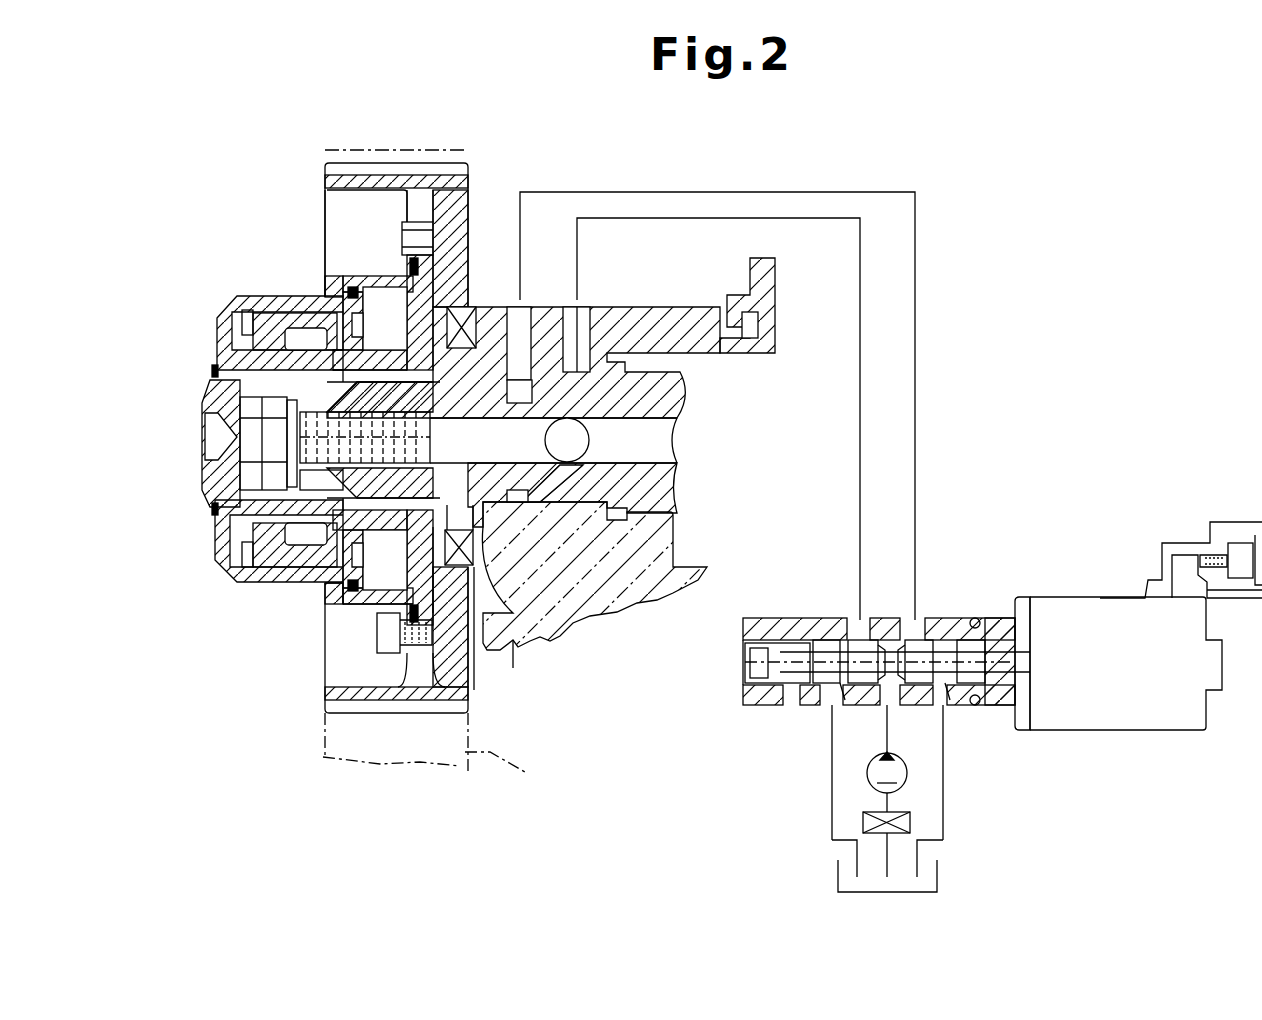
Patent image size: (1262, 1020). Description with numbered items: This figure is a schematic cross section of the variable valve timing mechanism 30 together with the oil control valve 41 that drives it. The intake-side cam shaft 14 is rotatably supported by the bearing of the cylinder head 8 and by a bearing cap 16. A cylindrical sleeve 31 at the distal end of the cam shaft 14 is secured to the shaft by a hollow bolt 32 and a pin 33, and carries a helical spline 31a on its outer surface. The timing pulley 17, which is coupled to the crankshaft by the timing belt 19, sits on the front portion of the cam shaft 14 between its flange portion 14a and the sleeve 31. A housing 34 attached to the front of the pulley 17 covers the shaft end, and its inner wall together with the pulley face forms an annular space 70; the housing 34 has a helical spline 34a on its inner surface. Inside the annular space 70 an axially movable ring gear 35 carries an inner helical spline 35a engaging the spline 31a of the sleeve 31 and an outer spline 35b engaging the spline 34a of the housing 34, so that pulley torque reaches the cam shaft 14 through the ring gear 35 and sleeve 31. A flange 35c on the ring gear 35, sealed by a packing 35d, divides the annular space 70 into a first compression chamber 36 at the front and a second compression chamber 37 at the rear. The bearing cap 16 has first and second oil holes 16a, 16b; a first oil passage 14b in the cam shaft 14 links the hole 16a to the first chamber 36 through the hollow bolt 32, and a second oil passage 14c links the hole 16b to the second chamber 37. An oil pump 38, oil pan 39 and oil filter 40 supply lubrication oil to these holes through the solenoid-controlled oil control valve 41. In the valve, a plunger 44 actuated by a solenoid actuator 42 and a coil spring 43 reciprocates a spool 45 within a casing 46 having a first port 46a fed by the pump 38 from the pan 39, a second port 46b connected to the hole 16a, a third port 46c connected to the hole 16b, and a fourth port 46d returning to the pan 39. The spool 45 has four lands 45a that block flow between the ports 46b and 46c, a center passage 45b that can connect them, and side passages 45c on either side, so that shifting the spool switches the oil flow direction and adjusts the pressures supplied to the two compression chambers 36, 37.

The cylinder head 8 is at (578, 640).
The intake-side cam shaft 14 is at (680, 395).
The flange portion 14a is at (481, 602).
The first oil passage 14b is at (448, 447).
The second oil passage 14c is at (448, 365).
The bearing cap 16 is at (760, 358).
The first oil hole 16a is at (583, 307).
The second oil hole 16b is at (515, 307).
The intake-side timing pulley 17 is at (325, 212).
The timing belt 19 is at (441, 768).
The variable valve timing mechanism 30 is at (184, 604).
The cylindrical sleeve 31 is at (237, 517).
The helical spline 31a is at (300, 313).
The hollow bolt 32 is at (222, 396).
The pin 33 is at (345, 480).
The housing 34 is at (250, 296).
The helical spline 34a is at (285, 583).
The ring gear 35 is at (232, 318).
The inner helical spline 35a is at (240, 352).
The outer spline 35b is at (262, 600).
The flange 35c is at (348, 612).
The packing 35d is at (367, 211).
The first compression chamber 36 is at (240, 300).
The second compression chamber 37 is at (400, 336).
The oil pump 38 is at (908, 773).
The oil pan 39 is at (940, 878).
The oil filter 40 is at (912, 822).
The oil control valve 41 is at (1162, 688).
The solenoid actuator 42 is at (1137, 749).
The coil spring 43 is at (743, 697).
The plunger 44 is at (885, 699).
The spool 45 is at (778, 618).
The lands 45a is at (825, 640).
The passage 45b is at (890, 640).
The passages 45c is at (835, 710).
The casing 46 is at (745, 618).
The first port 46a is at (880, 710).
The second port 46b is at (855, 618).
The third port 46c is at (912, 618).
The fourth port 46d is at (820, 705).
The annular space 70 is at (390, 293).